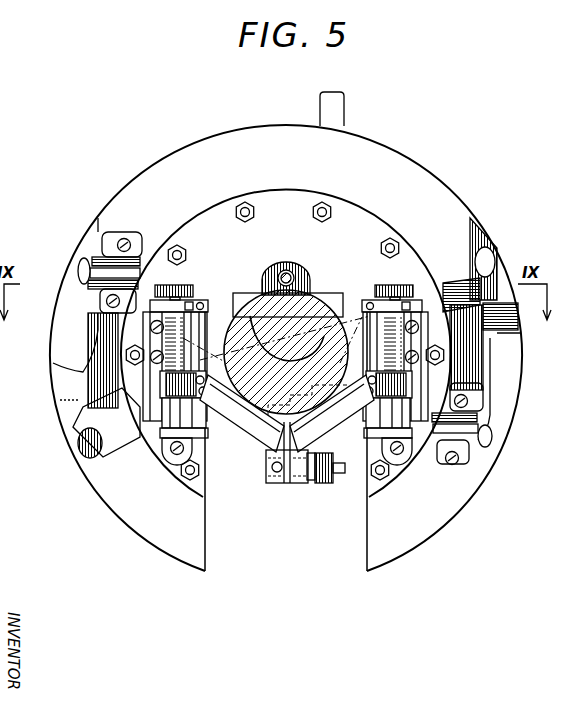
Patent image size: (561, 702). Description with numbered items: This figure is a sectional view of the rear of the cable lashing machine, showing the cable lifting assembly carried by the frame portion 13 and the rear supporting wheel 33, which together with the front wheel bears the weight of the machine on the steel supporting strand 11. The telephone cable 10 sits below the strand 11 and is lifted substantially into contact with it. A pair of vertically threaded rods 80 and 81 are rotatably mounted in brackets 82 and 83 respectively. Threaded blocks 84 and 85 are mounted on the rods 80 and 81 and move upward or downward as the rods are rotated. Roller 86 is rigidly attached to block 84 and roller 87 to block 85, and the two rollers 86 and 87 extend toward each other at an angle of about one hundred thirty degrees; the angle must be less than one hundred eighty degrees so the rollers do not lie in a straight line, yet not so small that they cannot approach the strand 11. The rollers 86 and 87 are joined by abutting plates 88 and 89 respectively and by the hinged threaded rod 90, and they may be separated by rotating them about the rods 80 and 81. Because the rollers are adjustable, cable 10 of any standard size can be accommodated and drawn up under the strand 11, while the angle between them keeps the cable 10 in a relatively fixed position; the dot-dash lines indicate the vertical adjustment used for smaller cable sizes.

The telephone cable 10 is at (318, 292).
The strand 11 is at (293, 275).
The frame portion 13 is at (463, 524).
The rear supporting wheel 33 is at (270, 288).
The threaded rod 80 is at (148, 300).
The threaded rod 81 is at (393, 322).
The bracket 82 is at (197, 300).
The bracket 83 is at (420, 310).
The threaded block 84 is at (165, 398).
The threaded block 85 is at (414, 434).
The roller 86 is at (242, 420).
The roller 87 is at (353, 413).
The abutting plate 88 is at (270, 492).
The abutting plate 89 is at (297, 483).
The hinged threaded rod 90 is at (338, 485).